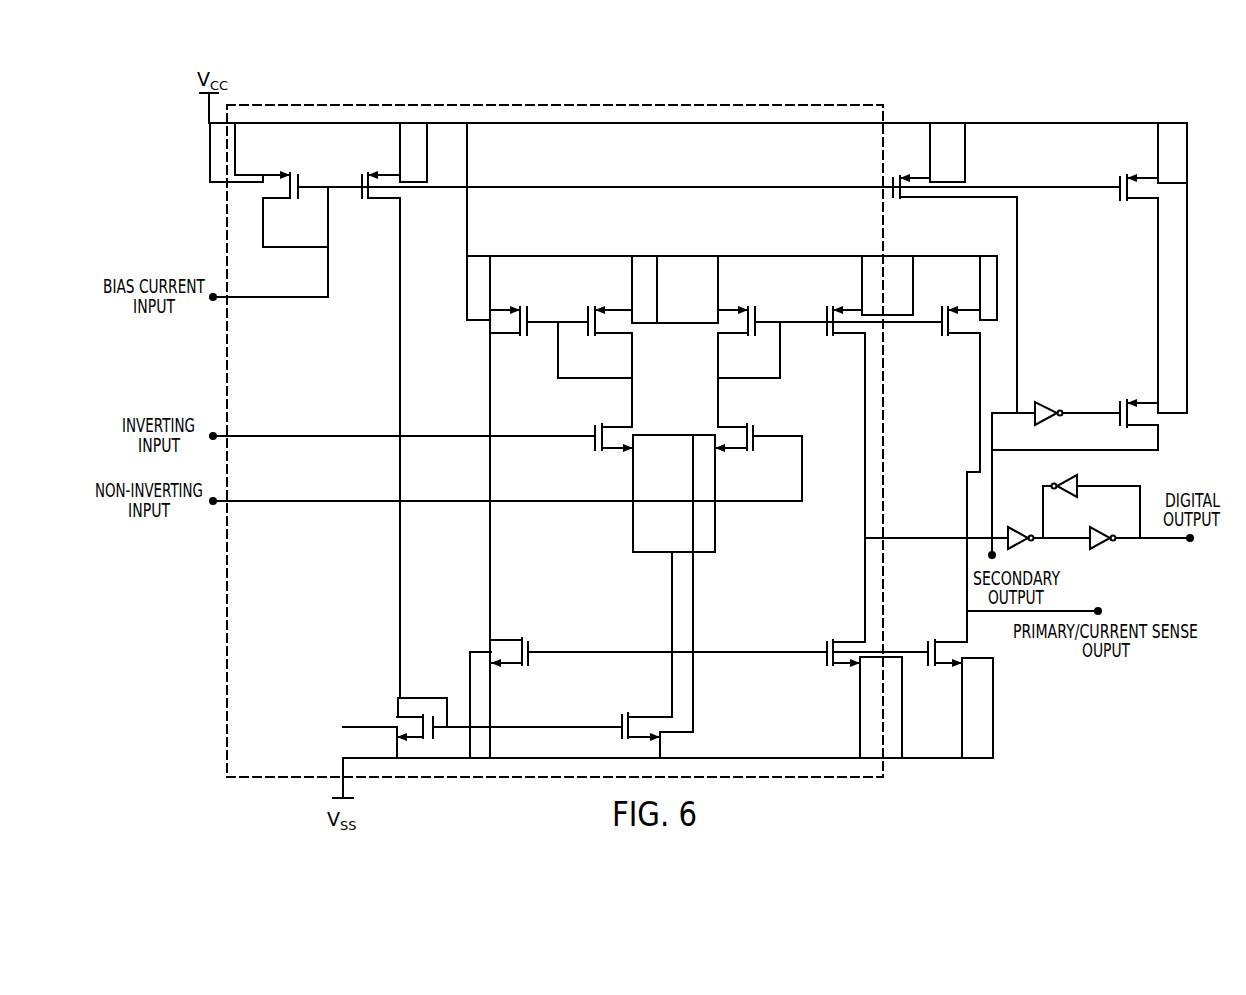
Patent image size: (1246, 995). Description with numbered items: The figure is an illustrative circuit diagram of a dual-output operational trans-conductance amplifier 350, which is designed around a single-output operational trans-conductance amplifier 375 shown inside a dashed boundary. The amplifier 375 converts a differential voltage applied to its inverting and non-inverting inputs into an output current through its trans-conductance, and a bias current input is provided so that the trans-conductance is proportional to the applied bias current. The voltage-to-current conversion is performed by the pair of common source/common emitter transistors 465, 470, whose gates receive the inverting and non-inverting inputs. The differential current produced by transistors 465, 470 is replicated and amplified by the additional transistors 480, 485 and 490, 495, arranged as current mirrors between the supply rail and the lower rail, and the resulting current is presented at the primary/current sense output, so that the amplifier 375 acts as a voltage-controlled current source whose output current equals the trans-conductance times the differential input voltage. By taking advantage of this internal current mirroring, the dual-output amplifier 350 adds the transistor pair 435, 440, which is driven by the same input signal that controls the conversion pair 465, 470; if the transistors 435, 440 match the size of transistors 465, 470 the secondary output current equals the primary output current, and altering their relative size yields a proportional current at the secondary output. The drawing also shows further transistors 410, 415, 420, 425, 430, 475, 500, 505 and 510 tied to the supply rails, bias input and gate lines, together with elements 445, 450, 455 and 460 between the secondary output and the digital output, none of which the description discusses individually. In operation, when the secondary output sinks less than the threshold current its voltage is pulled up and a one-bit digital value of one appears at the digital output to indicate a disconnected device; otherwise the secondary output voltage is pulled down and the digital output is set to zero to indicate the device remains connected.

The dual-output operational trans-conductance amplifier 350 is at (370, 94).
The single-output operational trans-conductance amplifier 375 is at (227, 647).
The bias transistor 410 is at (247, 173).
The bias transistor 415 is at (390, 173).
The transistor 420 is at (424, 714).
The transistor 425 is at (510, 640).
The transistor 430 is at (652, 714).
The additional transistor 435 is at (961, 336).
The additional transistor 440 is at (953, 641).
The inverter 445 is at (1020, 527).
The inverter 450 is at (1100, 546).
The feedback inverter 455 is at (1056, 478).
The inverter 460 is at (1040, 401).
The common source/common emitter transistor 465 is at (546, 435).
The common source/common emitter transistor 470 is at (732, 425).
The transistor 475 is at (479, 327).
The transistor 480 is at (581, 310).
The transistor 485 is at (738, 307).
The transistor 490 is at (846, 336).
The transistor 495 is at (815, 650).
The transistor 500 is at (893, 197).
The transistor 505 is at (1108, 194).
The transistor 510 is at (1135, 400).